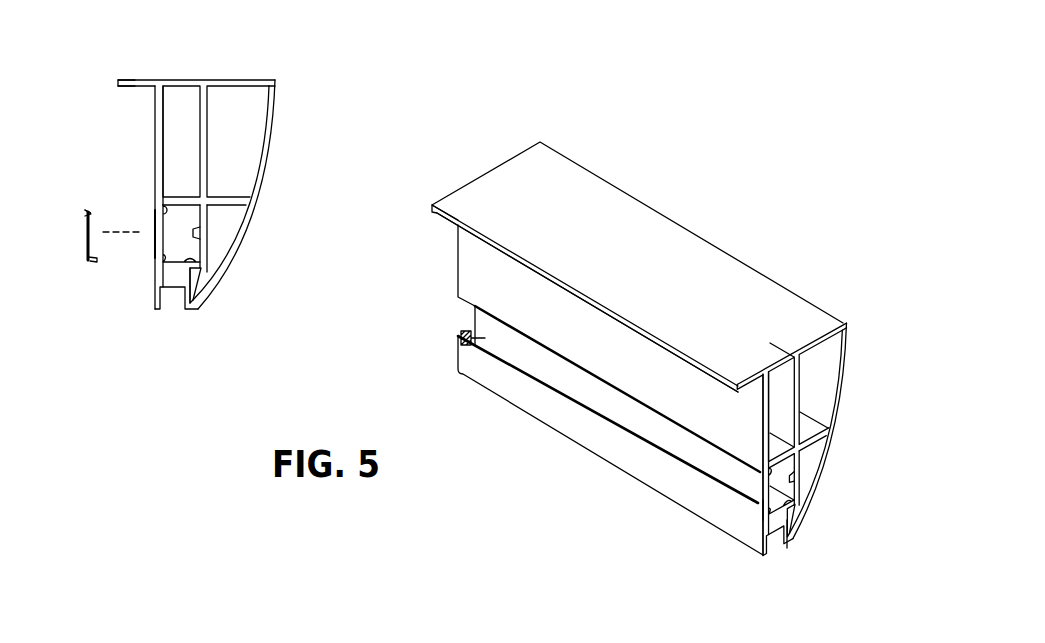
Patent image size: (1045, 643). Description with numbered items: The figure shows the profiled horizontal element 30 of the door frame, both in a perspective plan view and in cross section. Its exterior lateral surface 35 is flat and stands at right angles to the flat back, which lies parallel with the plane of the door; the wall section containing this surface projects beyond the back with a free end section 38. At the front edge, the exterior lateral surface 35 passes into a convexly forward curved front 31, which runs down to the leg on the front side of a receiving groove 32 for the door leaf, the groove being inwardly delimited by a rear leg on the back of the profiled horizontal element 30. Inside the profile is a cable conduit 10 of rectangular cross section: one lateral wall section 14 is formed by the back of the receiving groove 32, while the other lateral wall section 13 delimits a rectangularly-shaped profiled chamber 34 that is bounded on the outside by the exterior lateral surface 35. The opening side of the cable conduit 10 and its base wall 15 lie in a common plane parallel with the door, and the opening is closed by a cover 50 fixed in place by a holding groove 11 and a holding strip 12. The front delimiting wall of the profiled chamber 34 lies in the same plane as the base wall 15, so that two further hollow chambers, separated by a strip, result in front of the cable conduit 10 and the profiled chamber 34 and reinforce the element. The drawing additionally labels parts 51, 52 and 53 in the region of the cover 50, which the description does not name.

The cable conduit 10 is at (193, 243).
The holding groove 11 is at (155, 205).
The holding strip 12 is at (753, 510).
The lateral wall section 13 is at (238, 204).
The lateral wall section 14 is at (197, 290).
The base wall 15 is at (193, 240).
The profiled horizontal element 30 is at (303, 112).
The convexly forward curved front 31 is at (267, 163).
The receiving groove 32 is at (172, 305).
The profiled chamber 34 is at (180, 103).
The exterior lateral surface 35 is at (227, 80).
The free end section 38 is at (135, 79).
The cover 50 is at (88, 225).
The clip 51 is at (85, 210).
The clip leg 52 is at (86, 262).
The clip hook 53 is at (94, 264).